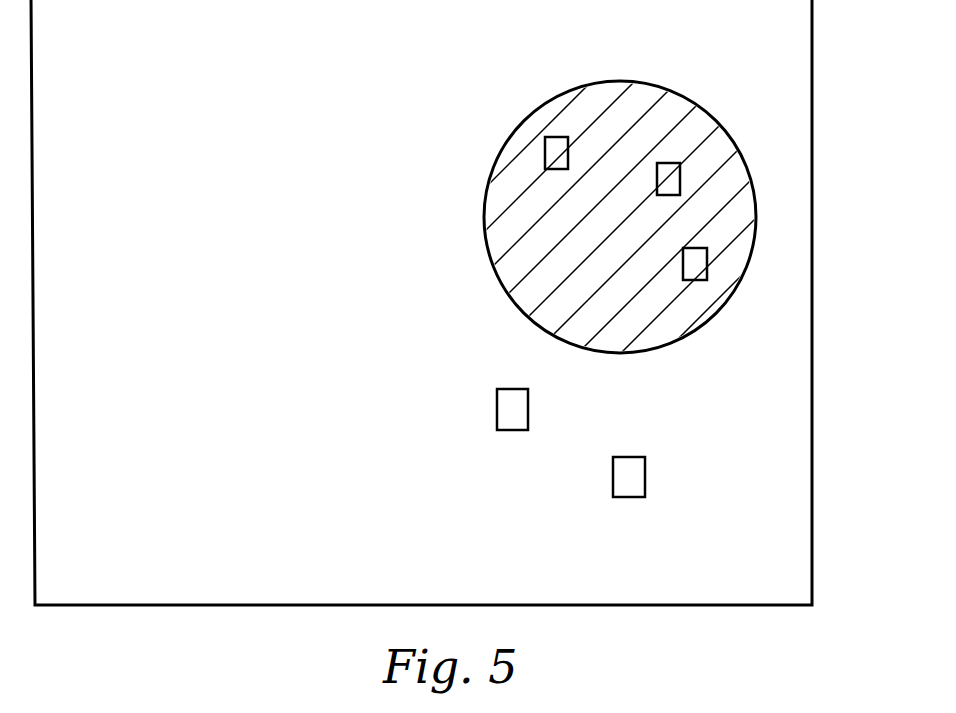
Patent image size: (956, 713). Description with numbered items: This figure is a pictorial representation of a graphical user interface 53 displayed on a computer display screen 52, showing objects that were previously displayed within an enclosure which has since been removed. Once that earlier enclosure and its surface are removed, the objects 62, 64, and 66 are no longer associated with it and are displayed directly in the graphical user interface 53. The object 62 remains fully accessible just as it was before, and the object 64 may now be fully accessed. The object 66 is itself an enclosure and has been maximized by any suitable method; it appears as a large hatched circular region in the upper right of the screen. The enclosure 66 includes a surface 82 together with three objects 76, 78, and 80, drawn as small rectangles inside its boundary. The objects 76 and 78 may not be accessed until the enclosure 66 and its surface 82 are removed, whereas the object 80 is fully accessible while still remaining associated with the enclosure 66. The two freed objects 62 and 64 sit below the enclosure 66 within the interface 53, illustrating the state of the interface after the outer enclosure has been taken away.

The computer display screen 52 is at (814, 60).
The graphical user interface 53 is at (127, 70).
The object (enclosure) 66 is at (721, 125).
The object 76 is at (555, 137).
The object 78 is at (669, 163).
The object 80 is at (707, 267).
The surface 82 is at (614, 341).
The object 62 is at (509, 430).
The object 64 is at (633, 497).